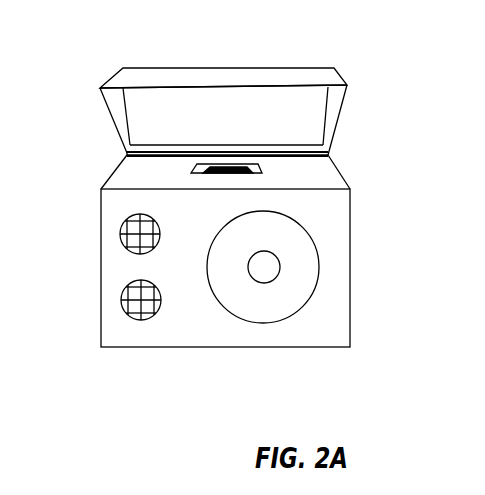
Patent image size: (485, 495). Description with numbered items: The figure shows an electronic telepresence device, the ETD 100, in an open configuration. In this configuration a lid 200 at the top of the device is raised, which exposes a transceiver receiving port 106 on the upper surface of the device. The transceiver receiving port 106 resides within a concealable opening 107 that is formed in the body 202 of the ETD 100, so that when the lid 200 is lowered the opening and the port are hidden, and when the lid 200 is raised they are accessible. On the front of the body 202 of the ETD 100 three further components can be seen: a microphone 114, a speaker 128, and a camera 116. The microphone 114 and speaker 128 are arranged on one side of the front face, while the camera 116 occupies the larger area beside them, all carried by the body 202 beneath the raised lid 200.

The ETD 100 is at (240, 30).
The lid 200 is at (354, 81).
The concealable opening 107 is at (104, 162).
The body 202 is at (268, 362).
The transceiver receiving port 106 is at (305, 132).
The microphone 114 is at (121, 233).
The speaker 128 is at (122, 301).
The camera 116 is at (320, 268).